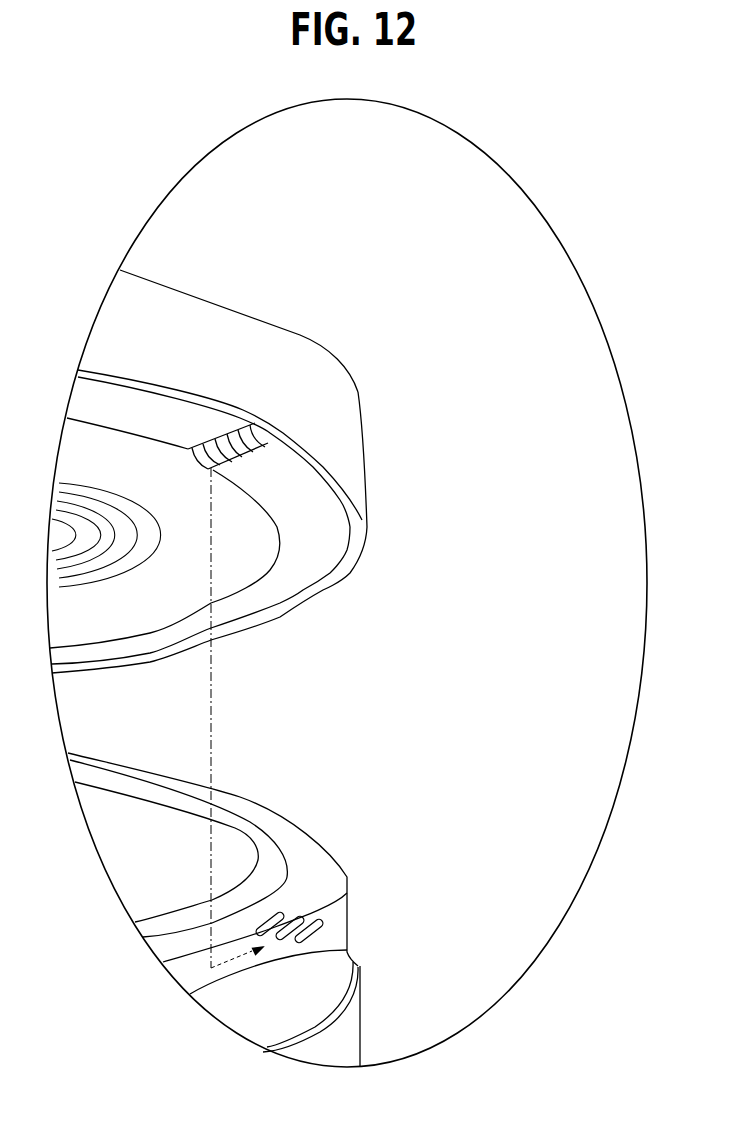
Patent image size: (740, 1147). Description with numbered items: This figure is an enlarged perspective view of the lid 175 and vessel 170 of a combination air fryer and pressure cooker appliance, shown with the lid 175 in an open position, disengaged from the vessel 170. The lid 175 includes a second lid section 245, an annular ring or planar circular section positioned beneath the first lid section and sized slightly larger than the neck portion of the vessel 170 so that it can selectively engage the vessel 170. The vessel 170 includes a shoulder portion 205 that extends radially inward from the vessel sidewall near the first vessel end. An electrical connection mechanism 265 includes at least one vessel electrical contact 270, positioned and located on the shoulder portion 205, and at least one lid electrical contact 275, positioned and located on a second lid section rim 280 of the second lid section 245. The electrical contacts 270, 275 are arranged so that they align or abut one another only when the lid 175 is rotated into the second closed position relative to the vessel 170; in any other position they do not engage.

The vessel 170 is at (339, 1039).
The lid 175 is at (218, 446).
The shoulder portion 205 is at (190, 967).
The second lid section 245 is at (256, 523).
The electrical connection mechanism 265 is at (476, 738).
The vessel electrical contact 270 is at (347, 886).
The lid electrical contact 275 is at (291, 385).
The second lid section rim 280 is at (177, 568).